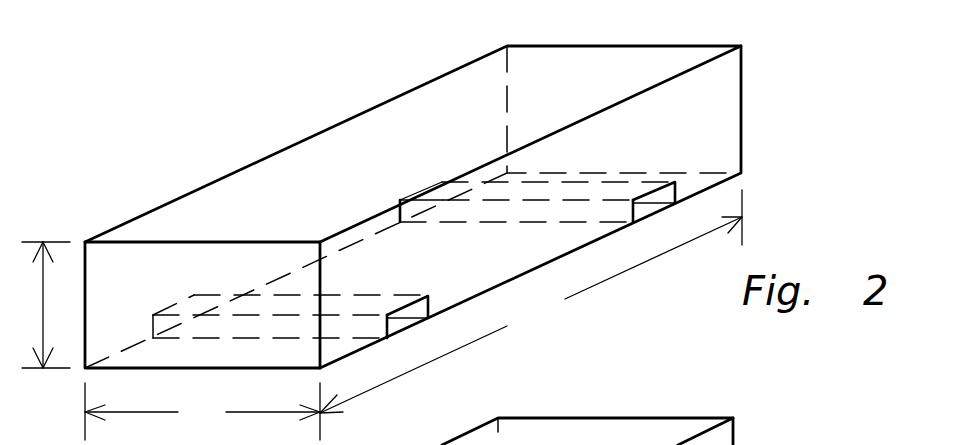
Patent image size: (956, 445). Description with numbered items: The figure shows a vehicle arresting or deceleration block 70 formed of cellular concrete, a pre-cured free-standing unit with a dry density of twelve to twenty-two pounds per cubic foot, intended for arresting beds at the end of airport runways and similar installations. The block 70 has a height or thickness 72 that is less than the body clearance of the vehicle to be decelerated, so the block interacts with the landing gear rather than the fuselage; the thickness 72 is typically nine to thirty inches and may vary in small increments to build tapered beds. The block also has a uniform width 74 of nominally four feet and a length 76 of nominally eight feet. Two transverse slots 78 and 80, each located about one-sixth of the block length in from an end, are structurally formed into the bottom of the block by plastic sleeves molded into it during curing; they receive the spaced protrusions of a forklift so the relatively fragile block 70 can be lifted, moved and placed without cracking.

The vehicle arresting block 70 is at (272, 117).
The height or thickness 72 is at (46, 305).
The width 74 is at (202, 411).
The length 76 is at (531, 301).
The transverse slot 78 is at (220, 295).
The transverse slot 80 is at (495, 222).